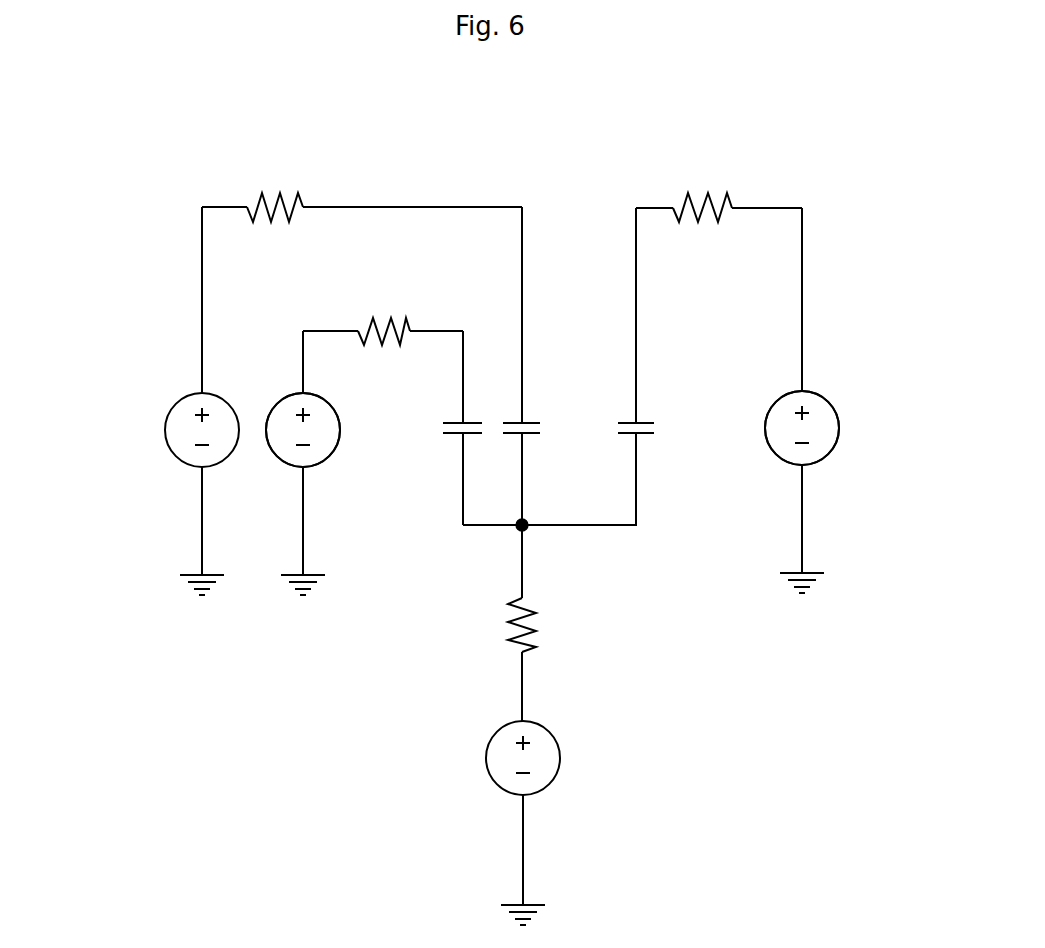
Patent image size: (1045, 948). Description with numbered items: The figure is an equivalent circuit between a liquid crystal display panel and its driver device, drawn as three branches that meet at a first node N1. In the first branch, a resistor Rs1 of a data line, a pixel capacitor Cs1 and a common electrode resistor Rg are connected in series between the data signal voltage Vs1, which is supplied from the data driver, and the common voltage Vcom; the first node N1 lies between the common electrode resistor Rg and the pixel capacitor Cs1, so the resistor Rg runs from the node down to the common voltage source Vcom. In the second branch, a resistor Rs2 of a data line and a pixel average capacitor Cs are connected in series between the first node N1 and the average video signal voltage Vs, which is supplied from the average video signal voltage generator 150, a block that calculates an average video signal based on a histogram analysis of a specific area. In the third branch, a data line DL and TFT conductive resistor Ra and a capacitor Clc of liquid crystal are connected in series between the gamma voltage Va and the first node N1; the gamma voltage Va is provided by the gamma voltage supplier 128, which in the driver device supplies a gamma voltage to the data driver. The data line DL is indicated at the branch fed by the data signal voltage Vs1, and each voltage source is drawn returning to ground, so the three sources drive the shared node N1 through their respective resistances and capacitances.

The data line DL is at (202, 322).
The average video signal voltage generator 150 is at (332, 455).
The gamma voltage supplier 128 is at (837, 447).
The first node N1 is at (550, 540).
The resistor of a data line Rs1 is at (362, 190).
The resistor of a data line Rs2 is at (383, 313).
The pixel average capacitor Cs is at (443, 428).
The pixel capacitor Cs1 is at (550, 366).
The capacitor of liquid crystal Clc is at (660, 366).
The TFT conductive resistor Ra is at (719, 189).
The common electrode resistor Rg is at (544, 623).
The data signal voltage Vs1 is at (177, 494).
The average video signal voltage Vs is at (322, 430).
The gamma voltage Va is at (782, 428).
The common voltage Vcom is at (563, 823).